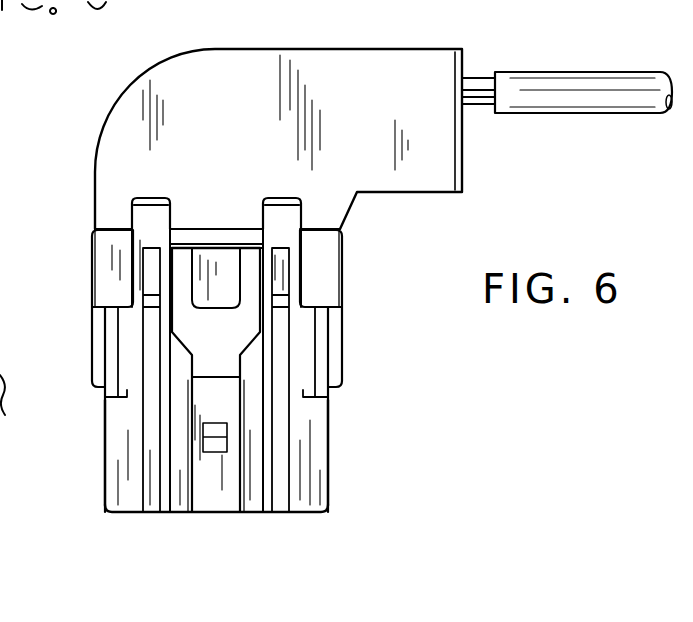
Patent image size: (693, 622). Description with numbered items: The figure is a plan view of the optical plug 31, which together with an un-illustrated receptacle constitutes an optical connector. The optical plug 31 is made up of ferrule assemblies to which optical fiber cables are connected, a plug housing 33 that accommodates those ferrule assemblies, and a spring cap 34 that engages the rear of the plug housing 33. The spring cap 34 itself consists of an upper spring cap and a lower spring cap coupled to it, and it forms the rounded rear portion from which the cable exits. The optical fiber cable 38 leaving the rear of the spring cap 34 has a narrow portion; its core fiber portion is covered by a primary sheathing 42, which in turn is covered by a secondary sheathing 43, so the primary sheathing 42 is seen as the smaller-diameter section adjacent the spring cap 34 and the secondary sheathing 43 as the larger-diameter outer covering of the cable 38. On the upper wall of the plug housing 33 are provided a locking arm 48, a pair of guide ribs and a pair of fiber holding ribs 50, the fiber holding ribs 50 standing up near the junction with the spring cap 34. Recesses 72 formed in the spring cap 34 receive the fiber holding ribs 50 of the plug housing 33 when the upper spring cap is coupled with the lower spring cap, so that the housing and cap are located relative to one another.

In FIG. 5, the spring cap 34 is at (300, 0).
In FIG. 6, the optical plug 31 is at (70, 212).
In FIG. 6, the recesses 72 is at (273, 198).
In FIG. 6, the fiber holding ribs 50 is at (278, 225).
In FIG. 6, the locking arm 48 is at (227, 413).
In FIG. 6, the plug housing 33 is at (328, 500).
In FIG. 6, the primary sheathing 42 is at (480, 85).
In FIG. 6, the secondary sheathing 43 is at (560, 80).
In FIG. 6, the optical fiber cable 38 is at (628, 85).